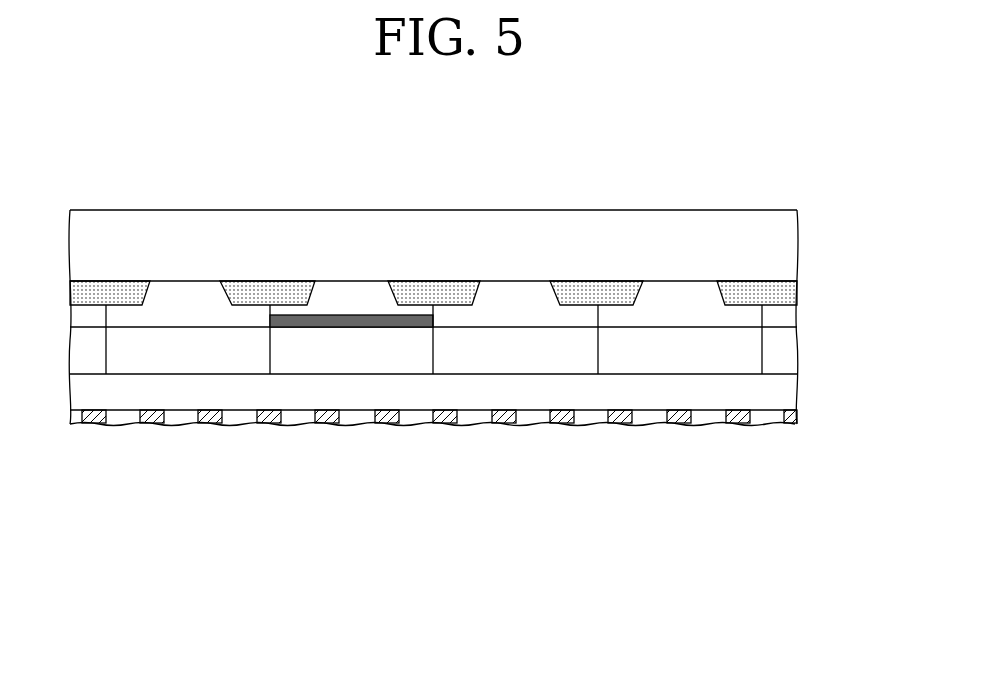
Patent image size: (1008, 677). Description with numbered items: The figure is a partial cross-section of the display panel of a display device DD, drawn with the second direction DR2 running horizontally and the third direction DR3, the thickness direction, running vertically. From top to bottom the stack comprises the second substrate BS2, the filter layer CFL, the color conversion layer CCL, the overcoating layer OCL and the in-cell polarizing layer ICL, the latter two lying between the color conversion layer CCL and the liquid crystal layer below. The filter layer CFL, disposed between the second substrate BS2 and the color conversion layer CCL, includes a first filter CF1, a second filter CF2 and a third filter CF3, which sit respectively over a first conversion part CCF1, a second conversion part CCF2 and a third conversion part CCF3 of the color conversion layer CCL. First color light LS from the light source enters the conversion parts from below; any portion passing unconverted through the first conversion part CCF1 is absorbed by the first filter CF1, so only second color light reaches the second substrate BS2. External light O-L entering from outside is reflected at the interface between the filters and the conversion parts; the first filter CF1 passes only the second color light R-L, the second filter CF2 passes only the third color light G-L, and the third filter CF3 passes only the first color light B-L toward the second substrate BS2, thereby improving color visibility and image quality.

The display device DD is at (740, 168).
The second substrate BS2 is at (790, 241).
The filter layer CFL is at (801, 302).
The first filter CF1 is at (213, 290).
The second filter CF2 is at (378, 290).
The third filter CF3 is at (542, 290).
The color conversion layer CCL is at (801, 350).
The first conversion part CCF1 is at (127, 363).
The second conversion part CCF2 is at (355, 363).
The third conversion part CCF3 is at (533, 363).
The overcoating layer OCL is at (788, 390).
The in-cell polarizing layer ICL is at (801, 420).
The external light O-L is at (188, 326).
The light corresponding to the second color R-L is at (190, 327).
The light corresponding to the third color G-L is at (352, 325).
The light corresponding to the first color B-L is at (517, 327).
The first color light LS is at (141, 330).
The third direction DR3 is at (72, 627).
The second direction DR2 is at (72, 627).